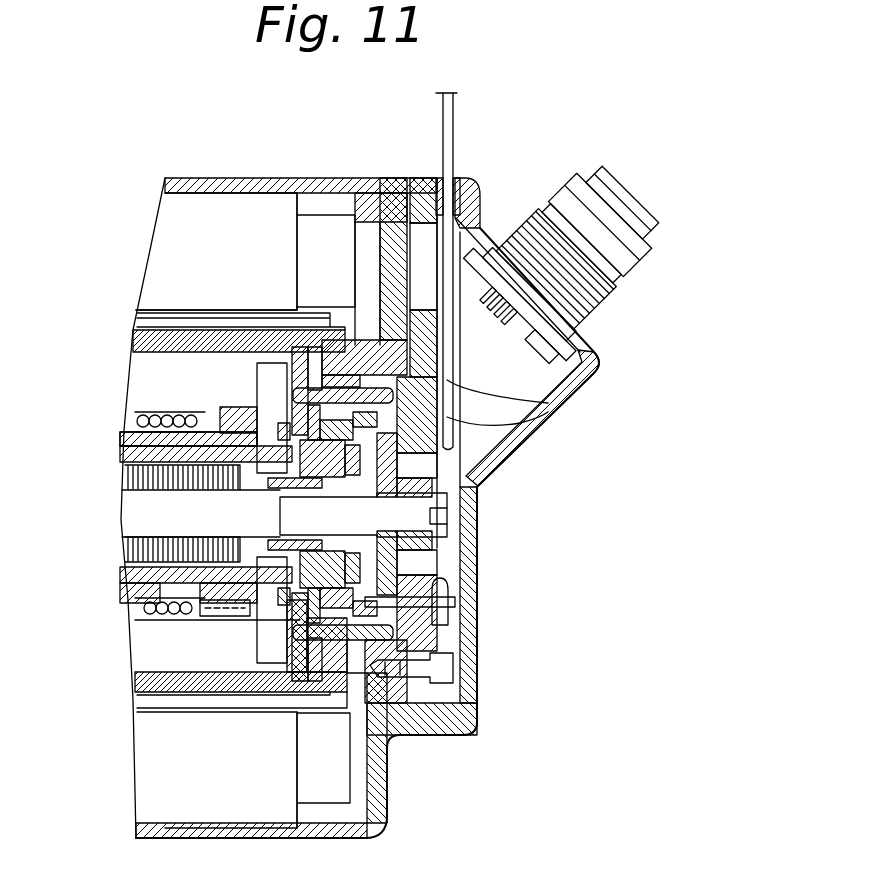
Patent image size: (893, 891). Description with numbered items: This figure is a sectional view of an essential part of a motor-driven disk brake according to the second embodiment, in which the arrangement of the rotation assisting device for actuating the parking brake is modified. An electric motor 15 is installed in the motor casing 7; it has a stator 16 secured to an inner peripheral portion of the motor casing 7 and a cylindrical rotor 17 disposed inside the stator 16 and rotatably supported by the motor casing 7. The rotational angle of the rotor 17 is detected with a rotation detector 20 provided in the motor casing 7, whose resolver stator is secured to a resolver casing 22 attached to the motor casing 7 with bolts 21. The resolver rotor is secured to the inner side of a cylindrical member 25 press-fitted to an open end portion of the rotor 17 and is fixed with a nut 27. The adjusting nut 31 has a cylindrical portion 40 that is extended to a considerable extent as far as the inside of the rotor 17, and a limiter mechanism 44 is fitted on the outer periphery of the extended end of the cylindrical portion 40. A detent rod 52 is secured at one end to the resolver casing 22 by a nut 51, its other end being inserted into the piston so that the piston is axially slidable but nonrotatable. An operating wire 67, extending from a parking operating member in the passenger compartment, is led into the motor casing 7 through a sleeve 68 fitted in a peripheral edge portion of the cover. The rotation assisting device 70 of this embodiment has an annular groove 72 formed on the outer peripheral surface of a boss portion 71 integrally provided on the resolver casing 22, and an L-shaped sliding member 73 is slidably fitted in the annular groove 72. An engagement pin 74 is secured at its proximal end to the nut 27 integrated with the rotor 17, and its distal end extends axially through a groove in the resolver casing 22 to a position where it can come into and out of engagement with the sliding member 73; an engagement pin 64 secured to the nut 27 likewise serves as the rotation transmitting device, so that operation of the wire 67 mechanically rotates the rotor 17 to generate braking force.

The motor casing 7 is at (214, 178).
The electric motor 15 is at (148, 243).
The stator 16 is at (187, 287).
The rotor 17 is at (143, 344).
The rotation detector 20 is at (333, 418).
The bolts 21 is at (467, 735).
The resolver casing 22 is at (548, 405).
The cylindrical member 25 is at (320, 625).
The nut 27 is at (363, 605).
The cylindrical portion 40 is at (128, 452).
The adjusting nut 31 is at (188, 439).
The limiter mechanism 44 is at (157, 618).
The nut 51 is at (455, 540).
The detent rod 52 is at (160, 518).
The engagement pin 64 is at (450, 668).
The operating wire 67 is at (447, 130).
The sleeve 68 is at (457, 178).
The rotation assisting device 70 is at (463, 568).
The boss portion 71 is at (460, 453).
The annular groove 72 is at (528, 442).
The sliding member 73 is at (443, 590).
The engagement pin 74 is at (413, 607).